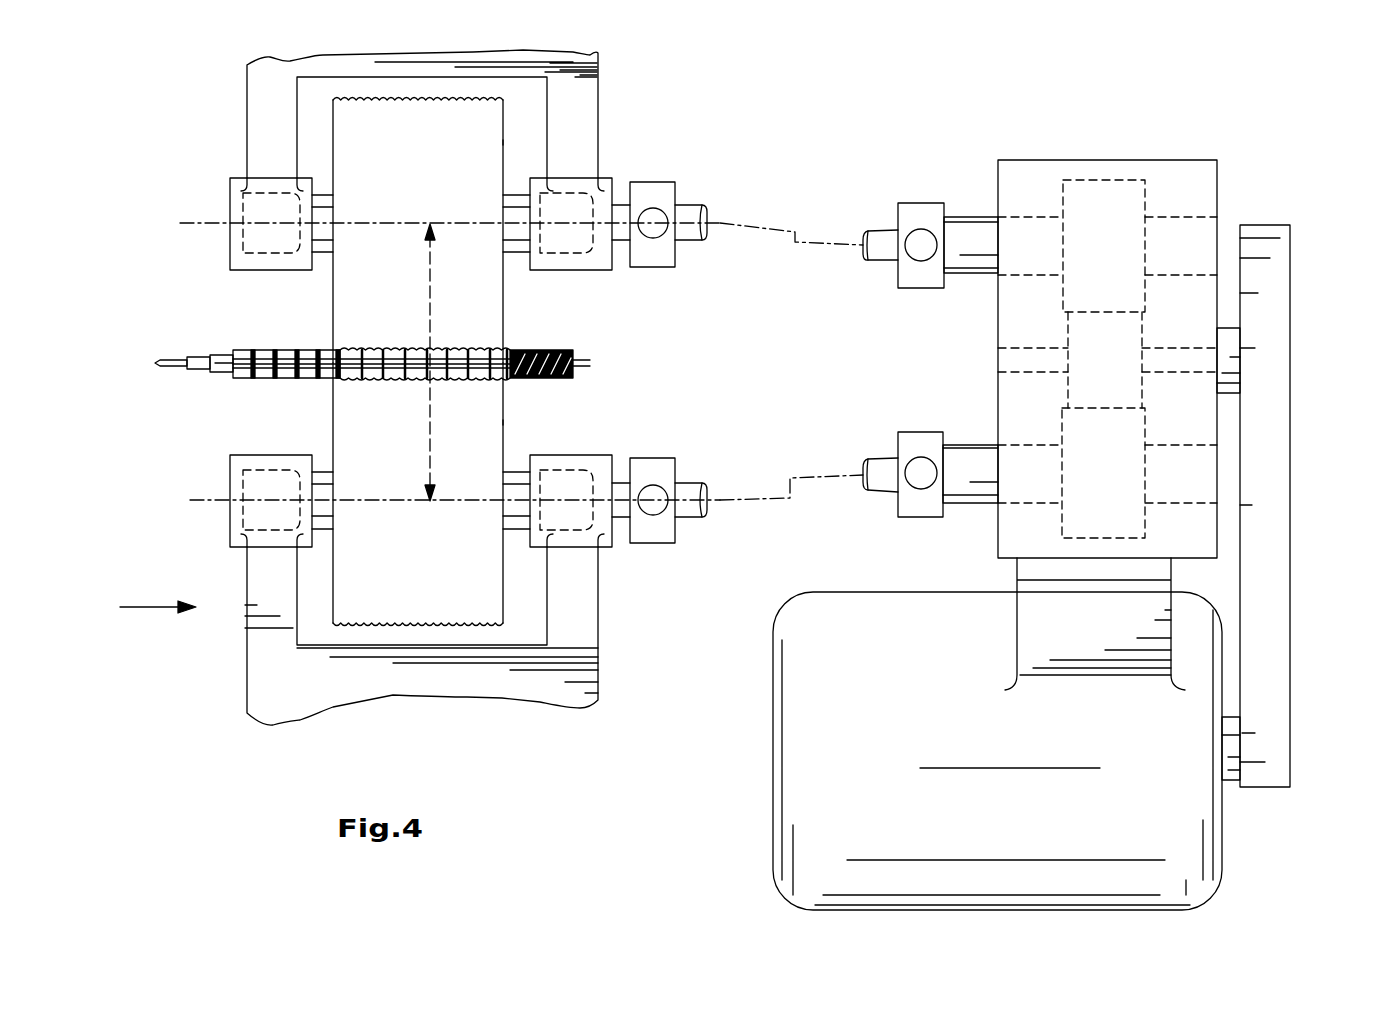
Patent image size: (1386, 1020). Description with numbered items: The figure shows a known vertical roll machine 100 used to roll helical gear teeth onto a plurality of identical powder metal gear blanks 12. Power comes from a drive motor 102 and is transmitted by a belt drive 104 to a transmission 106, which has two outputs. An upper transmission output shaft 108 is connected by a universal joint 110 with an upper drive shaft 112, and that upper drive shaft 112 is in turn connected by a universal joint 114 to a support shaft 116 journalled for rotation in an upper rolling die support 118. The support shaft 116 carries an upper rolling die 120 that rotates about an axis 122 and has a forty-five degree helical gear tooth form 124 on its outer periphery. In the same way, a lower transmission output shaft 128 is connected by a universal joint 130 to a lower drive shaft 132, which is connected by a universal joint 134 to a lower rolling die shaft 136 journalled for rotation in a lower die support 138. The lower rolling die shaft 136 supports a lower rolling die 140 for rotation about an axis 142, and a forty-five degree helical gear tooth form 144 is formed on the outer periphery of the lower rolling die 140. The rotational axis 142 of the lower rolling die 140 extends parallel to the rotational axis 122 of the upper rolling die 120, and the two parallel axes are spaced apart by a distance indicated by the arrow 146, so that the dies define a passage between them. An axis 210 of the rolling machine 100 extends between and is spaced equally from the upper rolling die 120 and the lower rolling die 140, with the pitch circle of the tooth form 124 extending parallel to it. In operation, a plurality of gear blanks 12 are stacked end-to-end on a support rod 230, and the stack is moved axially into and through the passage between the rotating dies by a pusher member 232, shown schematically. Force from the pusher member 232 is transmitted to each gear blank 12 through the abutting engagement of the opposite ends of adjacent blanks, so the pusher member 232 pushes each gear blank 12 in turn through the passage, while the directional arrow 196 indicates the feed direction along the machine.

The powder metal gear blank 12 is at (308, 350).
The vertical roll machine 100 is at (1027, 493).
The drive motor 102 is at (772, 900).
The belt drive 104 is at (1292, 532).
The transmission 106 is at (1105, 160).
The upper transmission output shaft 108 is at (975, 274).
The universal joint 110 is at (905, 288).
The upper drive shaft 112 is at (695, 207).
The universal joint 114 is at (652, 182).
The support shaft 116 is at (312, 262).
The upper rolling die support 118 is at (597, 55).
The upper rolling die 120 is at (512, 142).
The axis 122 is at (185, 223).
The helical gear tooth form 124 is at (412, 103).
The lower transmission output shaft 128 is at (982, 445).
The universal joint 130 is at (920, 432).
The lower drive shaft 132 is at (693, 481).
The universal joint 134 is at (648, 458).
The lower rolling die shaft 136 is at (314, 466).
The lower die support 138 is at (572, 696).
The lower rolling die 140 is at (512, 422).
The axis 142 is at (193, 500).
The helical gear tooth form 144 is at (413, 622).
The arrow 146 is at (430, 315).
The feed direction 196 is at (143, 607).
The axis of the rolling machine 210 is at (163, 366).
The support rod 230 is at (198, 358).
The pusher member 232 is at (225, 355).